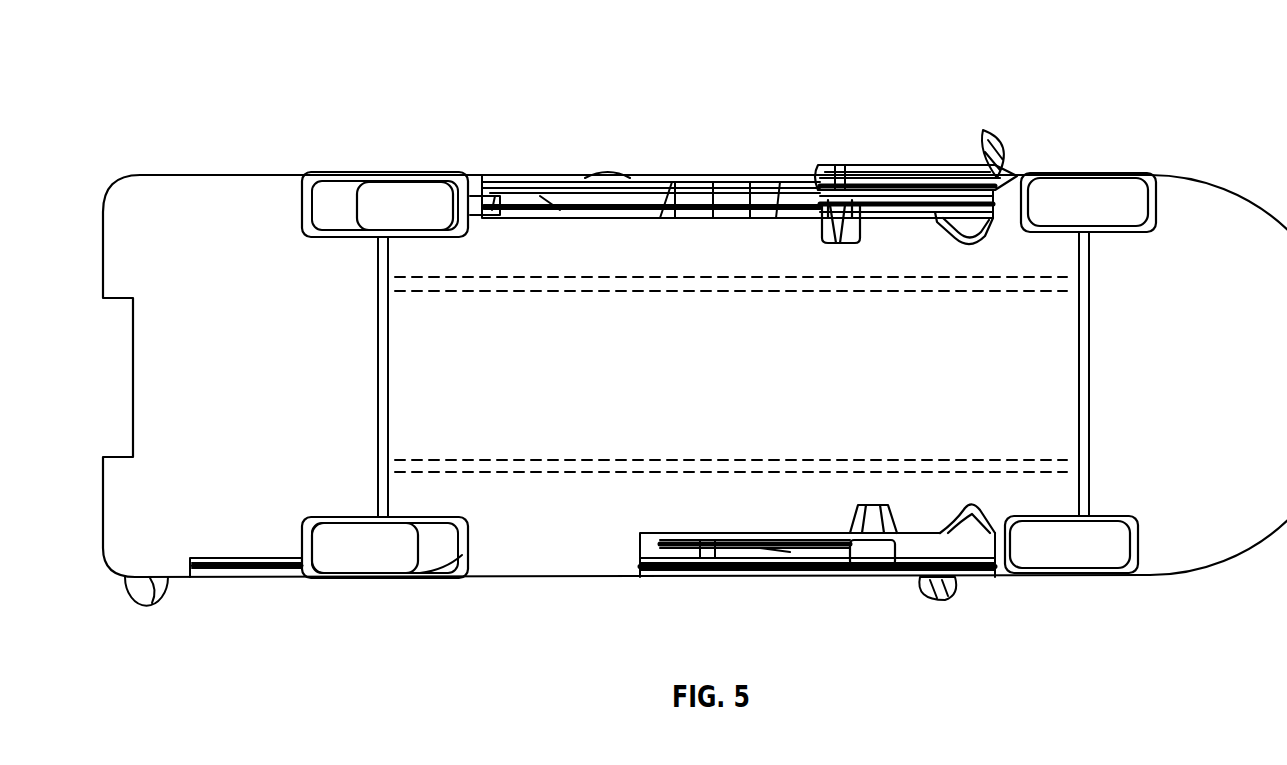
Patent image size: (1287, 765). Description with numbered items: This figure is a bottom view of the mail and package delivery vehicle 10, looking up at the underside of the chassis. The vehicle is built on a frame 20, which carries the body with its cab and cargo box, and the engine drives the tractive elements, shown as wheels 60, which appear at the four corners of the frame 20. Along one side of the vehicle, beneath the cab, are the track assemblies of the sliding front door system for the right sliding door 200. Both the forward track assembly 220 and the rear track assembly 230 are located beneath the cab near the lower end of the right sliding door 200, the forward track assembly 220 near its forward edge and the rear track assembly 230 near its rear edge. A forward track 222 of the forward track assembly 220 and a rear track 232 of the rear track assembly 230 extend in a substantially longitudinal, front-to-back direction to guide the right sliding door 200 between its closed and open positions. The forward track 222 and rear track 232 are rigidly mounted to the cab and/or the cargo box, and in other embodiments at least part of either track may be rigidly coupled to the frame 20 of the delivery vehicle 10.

The delivery vehicle 10 is at (397, 93).
The frame 20 is at (732, 268).
The wheels 60 is at (340, 195).
The right sliding door 200 is at (931, 152).
The forward track assembly 220 is at (970, 205).
The forward track 222 is at (745, 205).
The rear track assembly 230 is at (846, 214).
The rear track 232 is at (615, 205).